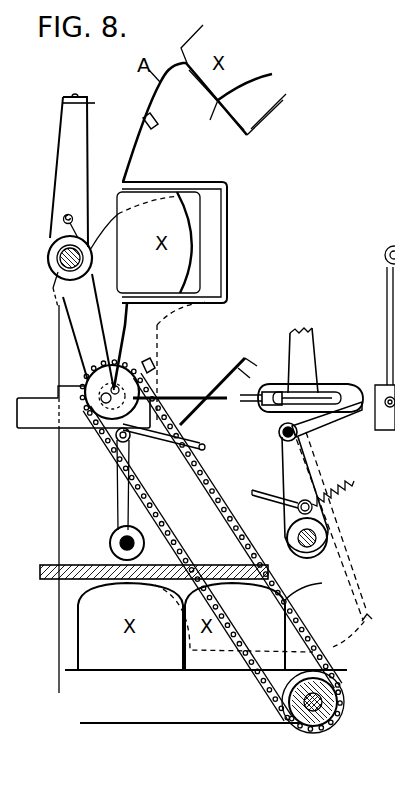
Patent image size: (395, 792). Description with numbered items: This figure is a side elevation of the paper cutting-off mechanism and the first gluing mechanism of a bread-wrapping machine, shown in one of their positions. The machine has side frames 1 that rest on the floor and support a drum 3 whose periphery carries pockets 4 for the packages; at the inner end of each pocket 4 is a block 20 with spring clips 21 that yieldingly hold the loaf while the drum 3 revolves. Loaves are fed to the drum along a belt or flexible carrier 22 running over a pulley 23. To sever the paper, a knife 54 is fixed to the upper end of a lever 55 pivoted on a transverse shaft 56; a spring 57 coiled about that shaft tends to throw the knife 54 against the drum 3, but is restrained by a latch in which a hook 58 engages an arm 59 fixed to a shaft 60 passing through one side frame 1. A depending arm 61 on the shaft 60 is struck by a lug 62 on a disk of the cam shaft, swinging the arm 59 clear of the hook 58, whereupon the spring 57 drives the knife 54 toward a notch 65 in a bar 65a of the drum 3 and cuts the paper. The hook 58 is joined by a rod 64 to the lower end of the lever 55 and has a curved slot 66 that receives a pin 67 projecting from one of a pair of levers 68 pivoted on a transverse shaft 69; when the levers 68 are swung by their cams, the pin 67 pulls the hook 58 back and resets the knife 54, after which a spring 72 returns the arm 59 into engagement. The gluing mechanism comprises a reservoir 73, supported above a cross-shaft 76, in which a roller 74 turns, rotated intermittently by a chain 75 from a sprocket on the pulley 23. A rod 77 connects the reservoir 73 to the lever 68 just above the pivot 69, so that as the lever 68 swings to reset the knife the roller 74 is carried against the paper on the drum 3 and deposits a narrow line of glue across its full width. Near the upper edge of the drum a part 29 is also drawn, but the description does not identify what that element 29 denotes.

The side frame 1 is at (60, 352).
The drum 3 is at (185, 122).
The pocket 4 is at (238, 136).
The block 20 is at (171, 242).
The spring clip 21 is at (183, 183).
The belt or flexible carrier 22 is at (188, 723).
The pulley 23 is at (310, 727).
The side plate 29 is at (267, 108).
The knife 54 is at (88, 103).
The lever 55 is at (60, 172).
The transverse shaft 56 is at (48, 258).
The spring 57 is at (52, 274).
The hook 58 is at (357, 393).
The arm 59 is at (330, 422).
The shaft 60 is at (280, 429).
The depending arm 61 is at (347, 558).
The lug 62 is at (367, 613).
The rod 64 is at (185, 396).
The notch 65 is at (153, 130).
The bar 65a is at (157, 360).
The curved slot 66 is at (320, 393).
The pin 67 is at (285, 393).
The lever 68 is at (303, 328).
The transverse shaft 69 is at (307, 548).
The spring 72 is at (307, 488).
The reservoir 73 is at (83, 407).
The roller 74 is at (130, 360).
The chain 75 is at (232, 524).
The cross-shaft 76 is at (110, 541).
The rod 77 is at (204, 446).